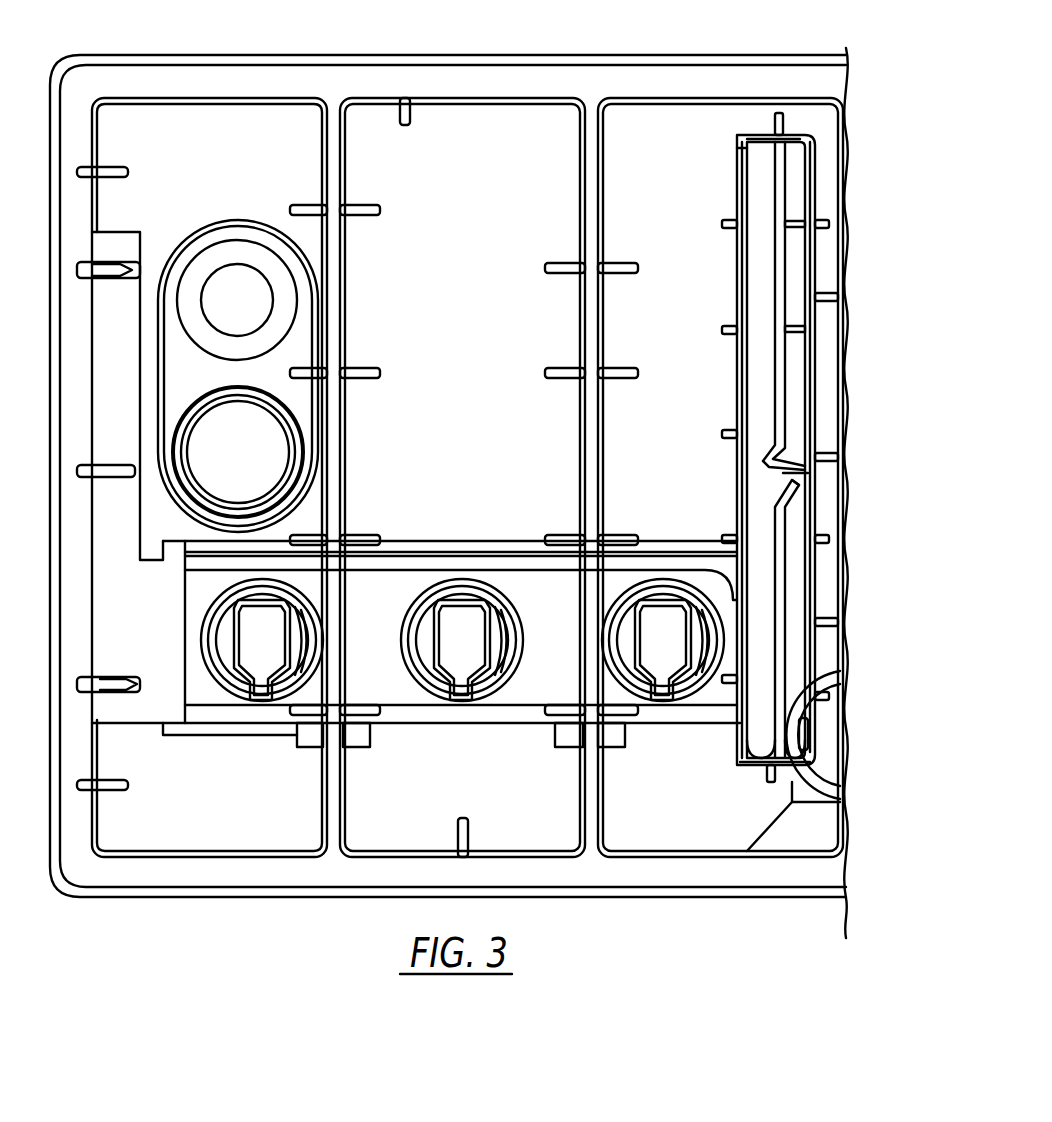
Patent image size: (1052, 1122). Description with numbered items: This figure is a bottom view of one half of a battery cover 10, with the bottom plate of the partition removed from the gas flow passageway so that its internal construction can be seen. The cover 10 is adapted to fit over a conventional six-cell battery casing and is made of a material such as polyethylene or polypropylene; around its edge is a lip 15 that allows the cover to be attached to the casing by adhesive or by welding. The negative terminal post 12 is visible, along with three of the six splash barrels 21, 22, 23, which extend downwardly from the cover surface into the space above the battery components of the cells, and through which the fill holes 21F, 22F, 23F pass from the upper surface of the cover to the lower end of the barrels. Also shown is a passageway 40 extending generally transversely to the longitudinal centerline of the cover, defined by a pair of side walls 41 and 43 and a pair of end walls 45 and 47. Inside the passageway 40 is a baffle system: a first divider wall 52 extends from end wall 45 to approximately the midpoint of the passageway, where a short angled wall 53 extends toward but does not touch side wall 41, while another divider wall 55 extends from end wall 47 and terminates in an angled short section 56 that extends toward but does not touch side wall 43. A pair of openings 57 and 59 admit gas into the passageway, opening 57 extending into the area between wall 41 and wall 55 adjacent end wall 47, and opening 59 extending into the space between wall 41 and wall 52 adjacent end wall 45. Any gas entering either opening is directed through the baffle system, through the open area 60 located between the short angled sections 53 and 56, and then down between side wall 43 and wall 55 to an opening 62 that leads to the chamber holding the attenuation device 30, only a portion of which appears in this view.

The cover 10 is at (512, 332).
The negative terminal post 12 is at (250, 448).
The lip 15 is at (78, 888).
The splash barrel 21 is at (212, 618).
The fill hole 21F is at (284, 645).
The splash barrel 22 is at (505, 678).
The fill hole 22F is at (484, 645).
The splash barrel 23 is at (613, 605).
The fill hole 23F is at (685, 645).
The attenuation device 30 is at (853, 747).
The passageway 40 is at (737, 354).
The side wall 41 is at (738, 400).
The side wall 43 is at (812, 375).
The end wall 45 is at (808, 133).
The end wall 47 is at (792, 780).
The first divider wall 52 is at (775, 185).
The short angled wall 53 is at (765, 460).
The divider wall 55 is at (787, 598).
The angled short section 56 is at (790, 502).
The opening 57 is at (729, 770).
The opening 59 is at (737, 148).
The open area 60 is at (810, 473).
The opening 62 is at (803, 732).